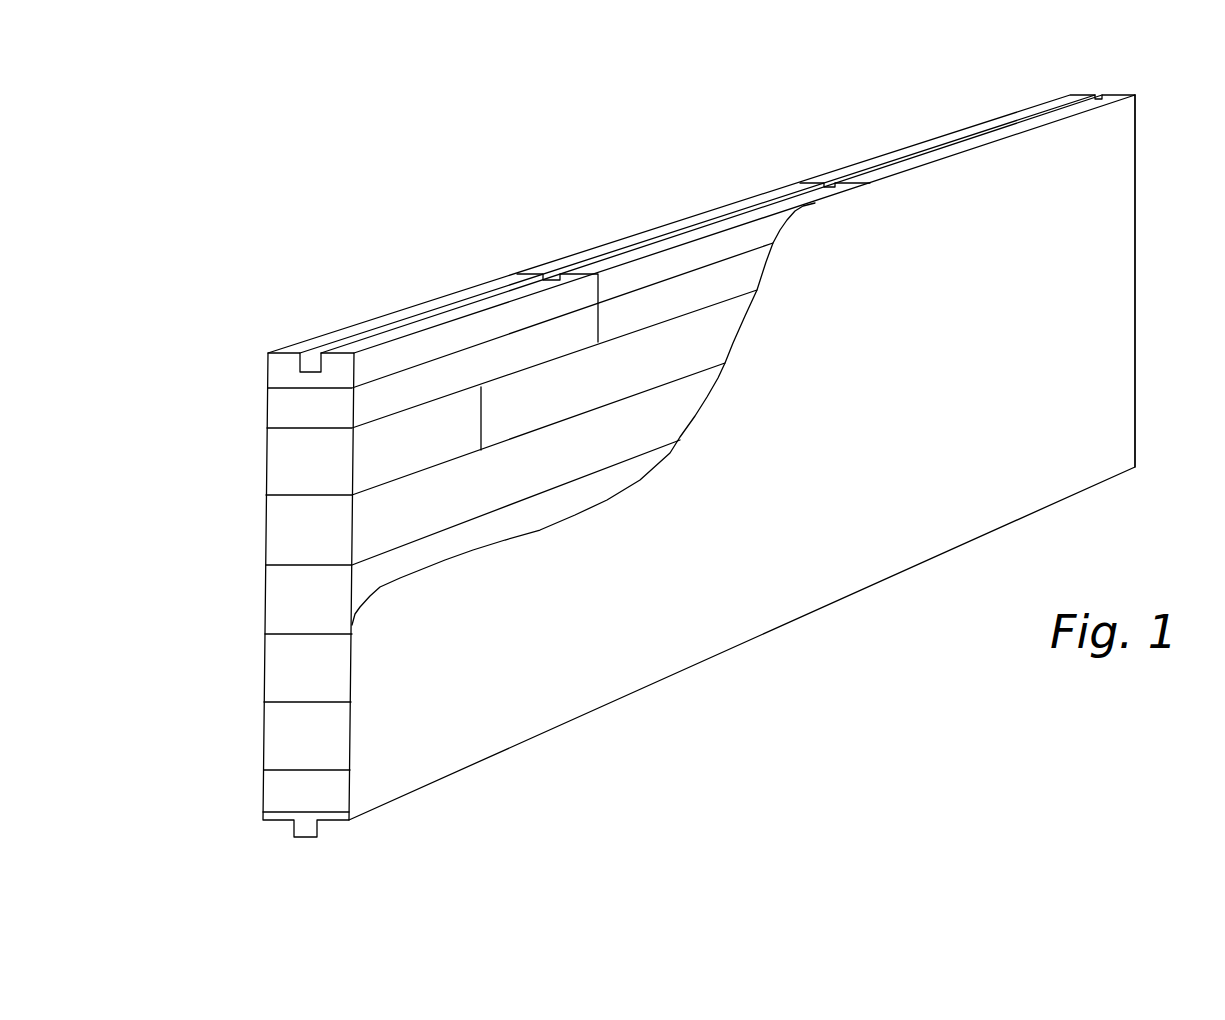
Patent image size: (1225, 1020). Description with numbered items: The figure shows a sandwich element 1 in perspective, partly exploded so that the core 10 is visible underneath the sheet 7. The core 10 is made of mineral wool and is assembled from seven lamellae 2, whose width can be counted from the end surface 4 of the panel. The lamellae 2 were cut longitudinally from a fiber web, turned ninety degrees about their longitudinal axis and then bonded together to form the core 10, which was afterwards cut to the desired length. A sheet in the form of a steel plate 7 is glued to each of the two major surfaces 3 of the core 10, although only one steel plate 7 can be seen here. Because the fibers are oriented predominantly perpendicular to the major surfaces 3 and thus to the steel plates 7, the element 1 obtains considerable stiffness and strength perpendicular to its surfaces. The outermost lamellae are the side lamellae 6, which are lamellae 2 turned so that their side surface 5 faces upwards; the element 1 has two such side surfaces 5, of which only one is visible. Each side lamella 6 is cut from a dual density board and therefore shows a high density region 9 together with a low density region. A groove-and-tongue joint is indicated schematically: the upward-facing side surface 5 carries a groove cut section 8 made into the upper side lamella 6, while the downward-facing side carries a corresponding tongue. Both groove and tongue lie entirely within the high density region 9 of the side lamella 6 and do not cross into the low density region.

The sandwich element 1 is at (375, 278).
The lamellae 2 is at (299, 467).
The major surfaces 3 is at (1085, 332).
The end surface 4 is at (261, 533).
The side surface 5 is at (722, 203).
The side lamellae 6 is at (418, 397).
The steel plate 7 is at (835, 427).
The groove cut section 8 is at (299, 363).
The high density region 9 is at (367, 382).
The core 10 is at (261, 592).